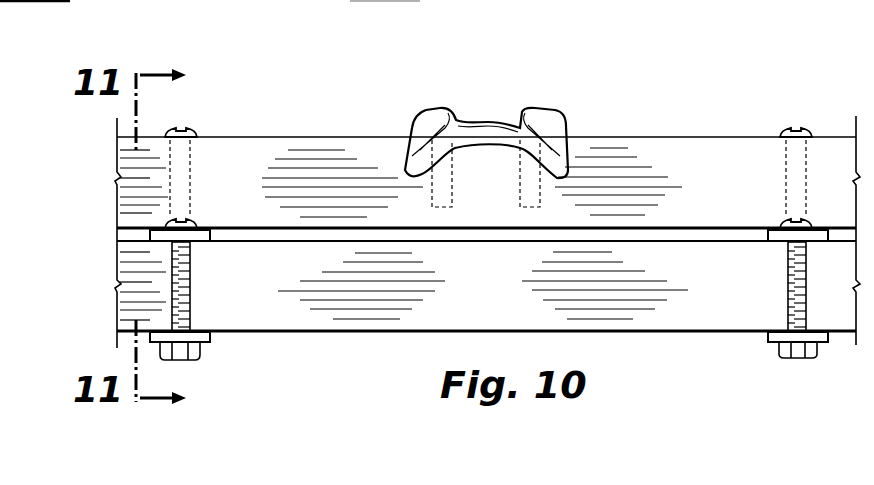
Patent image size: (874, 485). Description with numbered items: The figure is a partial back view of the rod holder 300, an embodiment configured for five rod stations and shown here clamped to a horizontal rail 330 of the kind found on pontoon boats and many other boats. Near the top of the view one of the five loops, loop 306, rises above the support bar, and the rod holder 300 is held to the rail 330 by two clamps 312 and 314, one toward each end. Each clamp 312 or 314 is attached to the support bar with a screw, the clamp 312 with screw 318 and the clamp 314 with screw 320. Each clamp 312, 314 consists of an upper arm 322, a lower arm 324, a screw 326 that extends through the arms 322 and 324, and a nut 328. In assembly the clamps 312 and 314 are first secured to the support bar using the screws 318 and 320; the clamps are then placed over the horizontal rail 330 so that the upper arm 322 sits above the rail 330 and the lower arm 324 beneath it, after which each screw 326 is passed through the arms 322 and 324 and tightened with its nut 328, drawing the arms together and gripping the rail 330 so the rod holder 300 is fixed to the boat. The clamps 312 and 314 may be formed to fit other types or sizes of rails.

The rod holder 300 is at (676, 125).
The loop 306 is at (557, 124).
The clamp 312 is at (222, 347).
The clamp 314 is at (750, 339).
The screw 318 is at (182, 128).
The screw 320 is at (803, 125).
The upper arm 322 is at (158, 237).
The lower arm 324 is at (162, 335).
The screw 326 is at (185, 217).
The nut 328 is at (188, 360).
The horizontal rail 330 is at (576, 303).